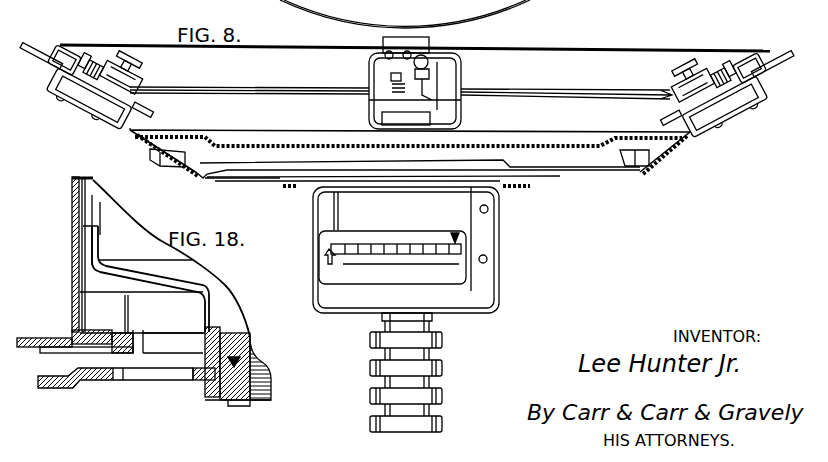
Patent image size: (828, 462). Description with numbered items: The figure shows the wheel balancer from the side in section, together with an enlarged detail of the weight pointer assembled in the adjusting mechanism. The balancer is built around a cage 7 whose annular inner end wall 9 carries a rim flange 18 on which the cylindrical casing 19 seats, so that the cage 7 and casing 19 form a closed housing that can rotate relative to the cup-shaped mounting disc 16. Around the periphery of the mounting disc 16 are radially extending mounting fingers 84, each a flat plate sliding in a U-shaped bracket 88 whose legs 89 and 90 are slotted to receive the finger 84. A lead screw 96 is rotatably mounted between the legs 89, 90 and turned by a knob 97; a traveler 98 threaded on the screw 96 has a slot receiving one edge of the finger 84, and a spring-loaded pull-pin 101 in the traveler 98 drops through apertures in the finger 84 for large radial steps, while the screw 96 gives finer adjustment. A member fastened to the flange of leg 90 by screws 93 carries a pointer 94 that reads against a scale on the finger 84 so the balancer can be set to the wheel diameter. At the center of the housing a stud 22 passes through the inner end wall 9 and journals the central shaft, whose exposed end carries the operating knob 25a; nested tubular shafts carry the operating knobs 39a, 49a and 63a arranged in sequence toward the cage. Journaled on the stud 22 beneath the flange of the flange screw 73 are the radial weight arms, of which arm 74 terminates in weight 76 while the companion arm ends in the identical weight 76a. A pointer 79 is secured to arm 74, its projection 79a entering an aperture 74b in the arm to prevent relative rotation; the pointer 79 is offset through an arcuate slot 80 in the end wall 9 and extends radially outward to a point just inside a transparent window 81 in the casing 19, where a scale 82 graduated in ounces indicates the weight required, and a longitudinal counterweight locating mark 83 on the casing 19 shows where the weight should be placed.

In FIG. 8, the cage 7 is at (511, 243).
In FIG. 18, the annular inner end wall 9 is at (125, 335).
In FIG. 8, the cup-shaped mounting disc 16 is at (247, 178).
In FIG. 18, the rim flange 18 is at (70, 301).
In FIG. 18, the cylindrical casing 19 is at (70, 216).
In FIG. 18, the stud 22 is at (240, 401).
In FIG. 8, the operating knob 25a is at (442, 426).
In FIG. 8, the operating knob 39a is at (442, 397).
In FIG. 8, the operating knob 49a is at (442, 368).
In FIG. 8, the operating knob 63a is at (442, 340).
In FIG. 8, the flange screw 73 is at (399, 153).
In FIG. 18, the flange screw 73 is at (255, 400).
In FIG. 18, the weight arm 74 is at (107, 380).
In FIG. 18, the aperture 74b is at (217, 398).
In FIG. 8, the weight 76 is at (152, 170).
In FIG. 8, the weight 76a is at (645, 165).
In FIG. 8, the pointer 79 is at (458, 233).
In FIG. 18, the projection 79a is at (257, 362).
In FIG. 18, the arcuate slot 80 is at (163, 343).
In FIG. 8, the transparent window 81 is at (408, 237).
In FIG. 18, the transparent window 81 is at (90, 187).
In FIG. 8, the scale 82 is at (443, 267).
In FIG. 8, the counterweight locating mark 83 is at (323, 252).
In FIG. 8, the mounting finger 84 is at (42, 38).
In FIG. 8, the U-shaped bracket 88 is at (93, 107).
In FIG. 8, the leg 89 is at (143, 109).
In FIG. 8, the leg 90 is at (58, 80).
In FIG. 8, the screws 93 is at (386, 52).
In FIG. 8, the pointer 94 is at (391, 77).
In FIG. 8, the lead screw 96 is at (96, 74).
In FIG. 8, the knob 97 is at (72, 52).
In FIG. 8, the traveler 98 is at (133, 78).
In FIG. 8, the pull-pin 101 is at (128, 60).